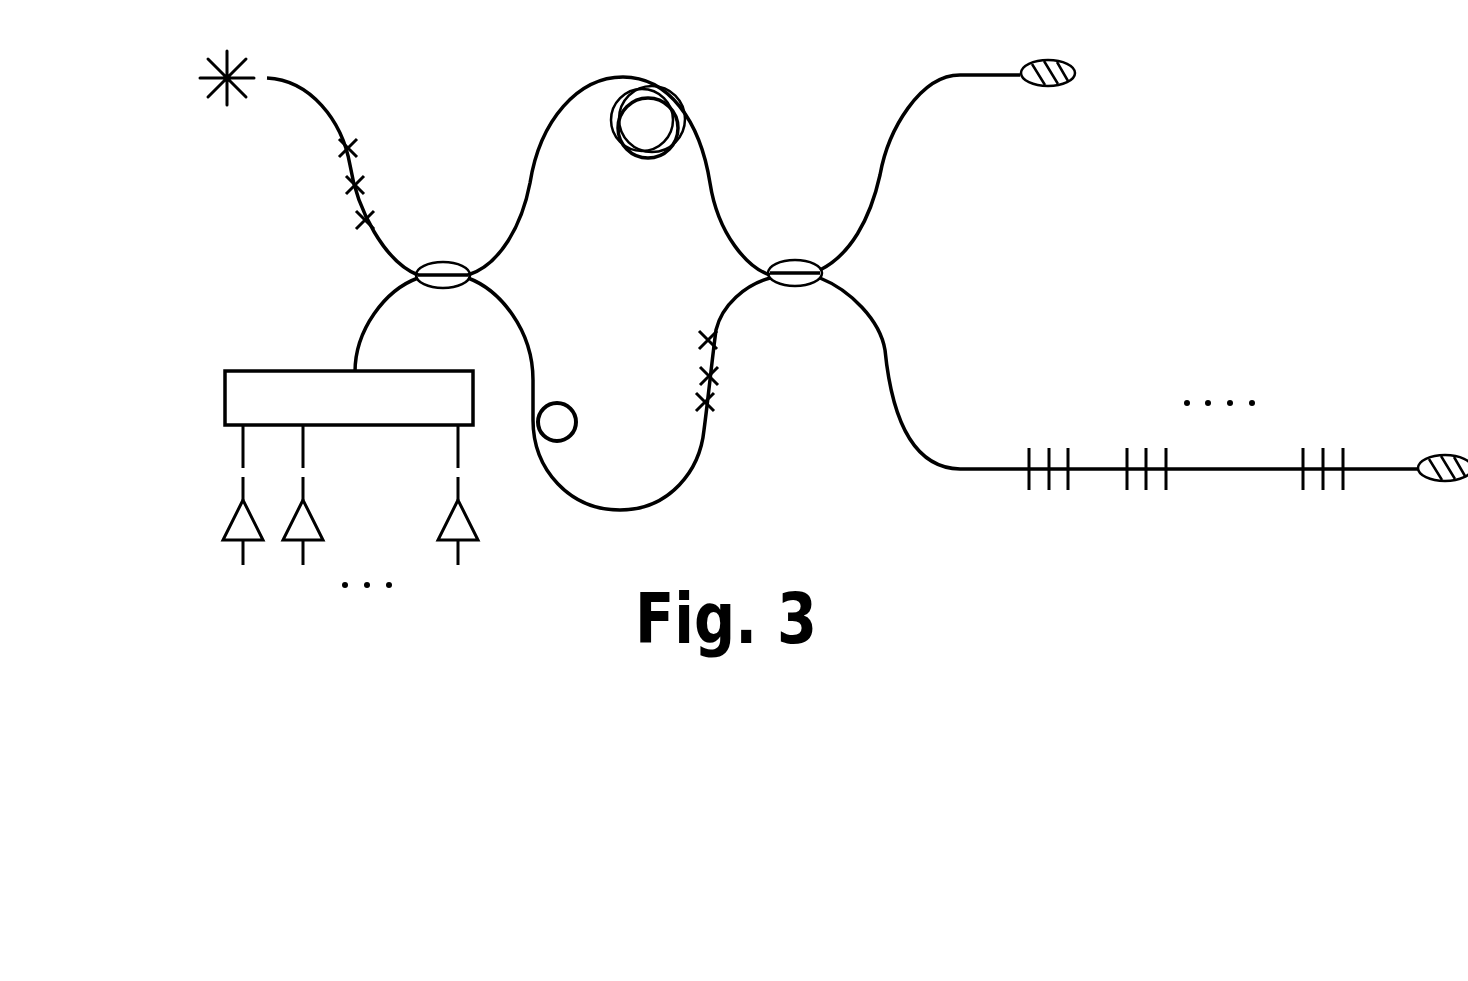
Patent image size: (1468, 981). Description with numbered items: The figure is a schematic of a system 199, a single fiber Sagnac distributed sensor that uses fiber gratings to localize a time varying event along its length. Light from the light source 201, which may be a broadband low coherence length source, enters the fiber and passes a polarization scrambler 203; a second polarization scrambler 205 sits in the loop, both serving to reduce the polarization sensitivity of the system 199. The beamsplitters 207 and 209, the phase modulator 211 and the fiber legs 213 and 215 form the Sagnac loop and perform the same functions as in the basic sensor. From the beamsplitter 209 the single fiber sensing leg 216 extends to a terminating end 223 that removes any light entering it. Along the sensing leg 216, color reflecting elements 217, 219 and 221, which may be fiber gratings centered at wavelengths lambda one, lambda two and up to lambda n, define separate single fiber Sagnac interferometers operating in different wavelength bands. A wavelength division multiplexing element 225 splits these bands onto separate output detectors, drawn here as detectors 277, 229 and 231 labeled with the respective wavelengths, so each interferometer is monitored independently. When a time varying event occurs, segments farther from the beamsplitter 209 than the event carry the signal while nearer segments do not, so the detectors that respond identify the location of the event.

The system 199 is at (350, 248).
The light source 201 is at (220, 104).
The polarization scrambler 203 is at (362, 188).
The polarization scrambler 205 is at (718, 380).
The beamsplitter 207 is at (440, 290).
The beamsplitter 209 is at (785, 288).
The phase modulator 211 is at (613, 397).
The fiber leg 213 is at (560, 92).
The fiber leg 215 is at (668, 497).
The single fiber sensing leg 216 is at (1119, 335).
The color reflecting element 217 is at (1050, 490).
The color reflecting element 219 is at (1146, 490).
The color reflecting element 221 is at (1343, 490).
The terminating end 223 is at (1445, 482).
The wavelength division multiplexing element 225 is at (296, 371).
The laser for wavelength 1 277 is at (226, 528).
The output detector 229 is at (288, 540).
The output detector 231 is at (475, 531).